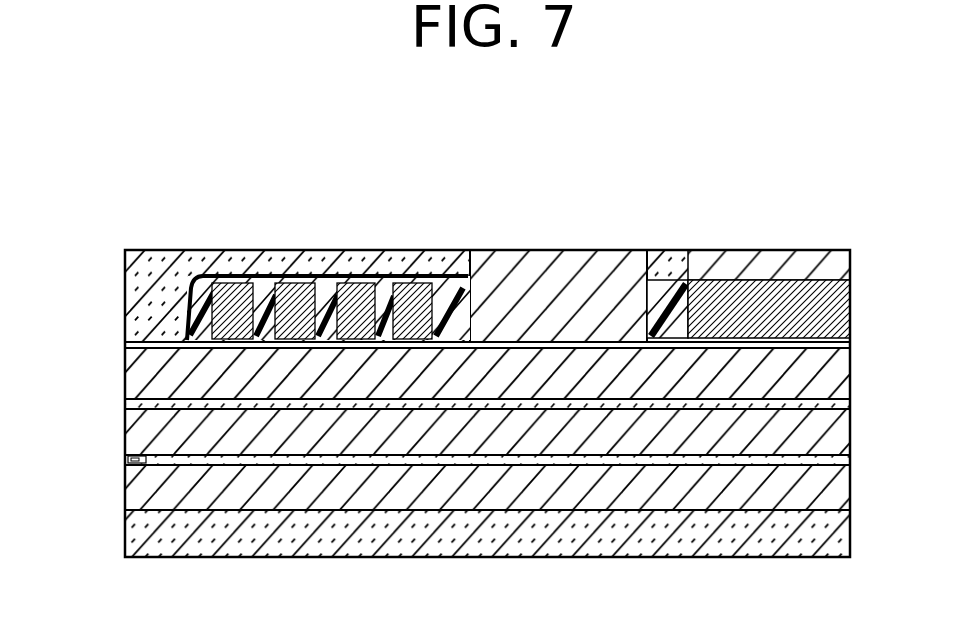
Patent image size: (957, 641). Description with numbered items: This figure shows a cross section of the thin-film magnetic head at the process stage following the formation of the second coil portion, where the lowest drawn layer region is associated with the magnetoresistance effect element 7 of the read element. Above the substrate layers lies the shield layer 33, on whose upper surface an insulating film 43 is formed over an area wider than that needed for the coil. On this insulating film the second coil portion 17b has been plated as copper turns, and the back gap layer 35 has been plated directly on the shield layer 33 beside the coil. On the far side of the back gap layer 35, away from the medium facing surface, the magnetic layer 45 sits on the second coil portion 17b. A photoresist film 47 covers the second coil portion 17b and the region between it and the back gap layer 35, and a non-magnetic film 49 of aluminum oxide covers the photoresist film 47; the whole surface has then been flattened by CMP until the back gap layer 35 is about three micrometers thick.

The magnetoresistance effect element 7 is at (124, 451).
The second coil portion 17b is at (352, 280).
The shield layer 33 is at (150, 370).
The back gap layer 35 is at (560, 276).
The insulating film 43 is at (152, 341).
The magnetic layer 45 is at (783, 268).
The photoresist film 47 is at (452, 276).
The non-magnetic film 49 is at (157, 273).